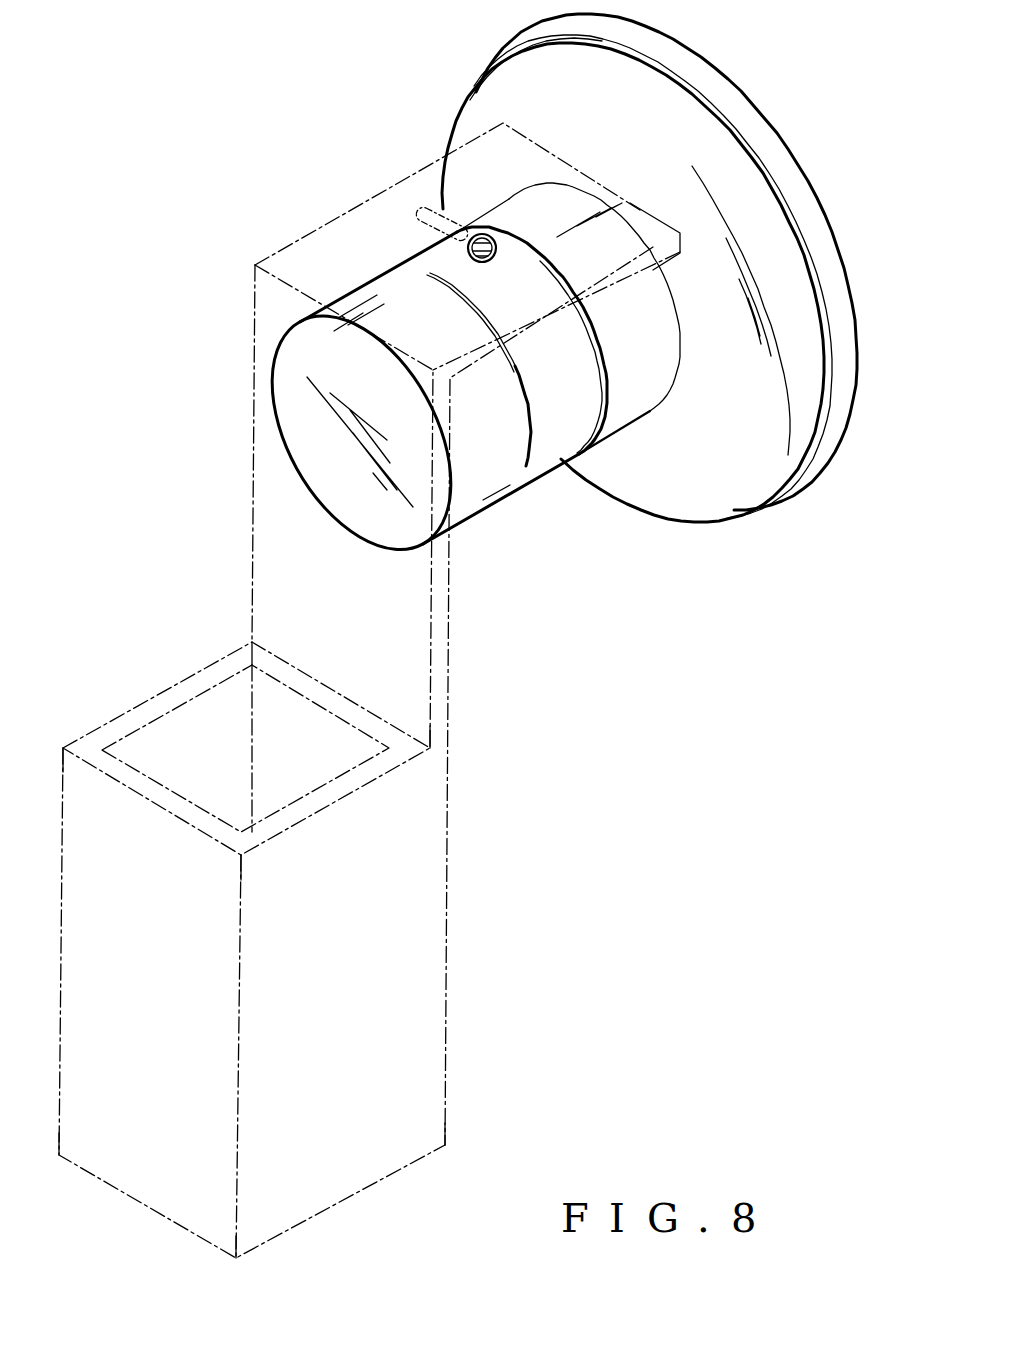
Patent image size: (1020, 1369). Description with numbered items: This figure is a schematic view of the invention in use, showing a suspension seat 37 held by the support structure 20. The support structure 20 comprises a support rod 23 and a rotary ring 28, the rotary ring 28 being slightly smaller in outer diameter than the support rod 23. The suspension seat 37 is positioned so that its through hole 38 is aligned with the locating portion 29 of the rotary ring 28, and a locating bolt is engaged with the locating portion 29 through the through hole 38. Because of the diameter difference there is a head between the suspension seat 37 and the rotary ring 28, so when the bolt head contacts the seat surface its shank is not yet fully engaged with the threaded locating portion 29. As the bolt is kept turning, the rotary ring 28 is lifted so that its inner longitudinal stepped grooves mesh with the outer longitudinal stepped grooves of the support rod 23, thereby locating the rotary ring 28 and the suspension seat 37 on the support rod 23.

The support structure 20 is at (489, 542).
The support rod 23 is at (640, 395).
The rotary ring 28 is at (547, 427).
The locating portion 29 is at (487, 265).
The suspension seat 37 is at (420, 824).
The through hole 38 is at (423, 213).